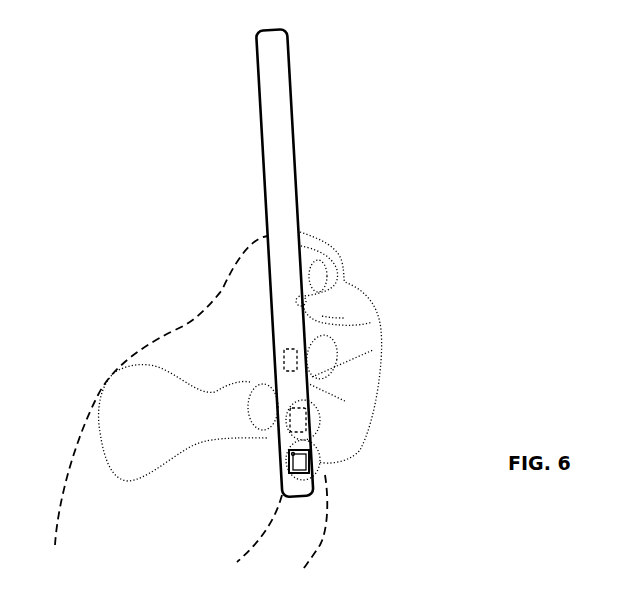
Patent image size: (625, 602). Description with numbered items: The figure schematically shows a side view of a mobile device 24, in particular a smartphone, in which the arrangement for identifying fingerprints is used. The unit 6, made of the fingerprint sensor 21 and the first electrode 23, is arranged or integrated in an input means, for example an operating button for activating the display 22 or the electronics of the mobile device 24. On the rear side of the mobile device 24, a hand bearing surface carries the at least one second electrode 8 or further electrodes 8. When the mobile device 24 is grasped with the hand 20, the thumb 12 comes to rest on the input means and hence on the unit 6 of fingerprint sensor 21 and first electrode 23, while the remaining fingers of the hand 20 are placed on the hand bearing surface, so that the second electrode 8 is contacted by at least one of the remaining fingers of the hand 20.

The unit 6 is at (270, 381).
The second electrode 8 is at (313, 303).
The thumb 12 is at (229, 440).
The hand 20 is at (78, 386).
The fingerprint sensor 21 is at (279, 433).
The display 22 is at (253, 71).
The first electrode 23 is at (275, 408).
The mobile device 24 is at (367, 79).